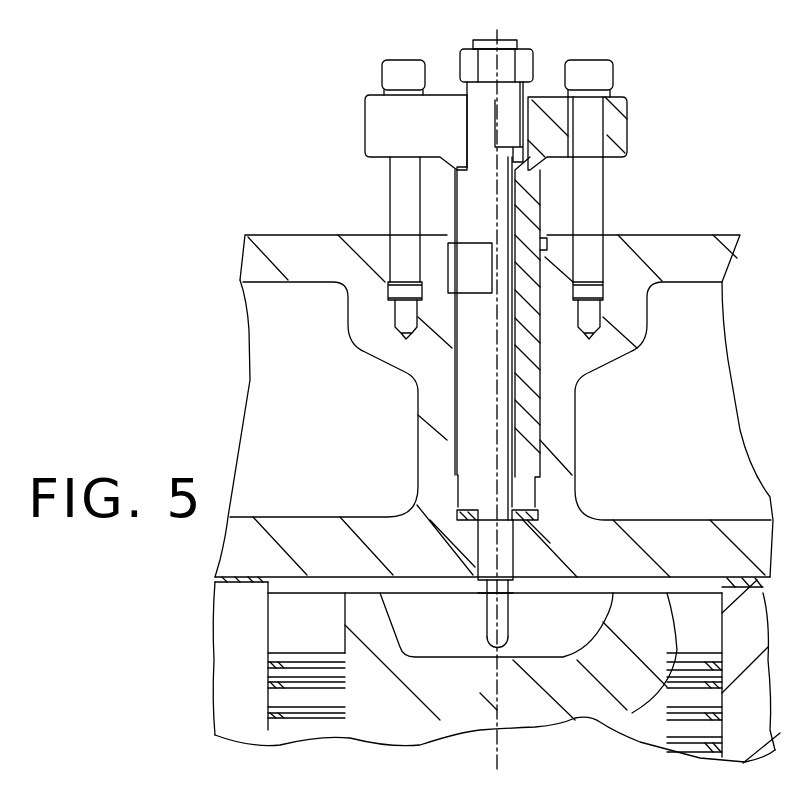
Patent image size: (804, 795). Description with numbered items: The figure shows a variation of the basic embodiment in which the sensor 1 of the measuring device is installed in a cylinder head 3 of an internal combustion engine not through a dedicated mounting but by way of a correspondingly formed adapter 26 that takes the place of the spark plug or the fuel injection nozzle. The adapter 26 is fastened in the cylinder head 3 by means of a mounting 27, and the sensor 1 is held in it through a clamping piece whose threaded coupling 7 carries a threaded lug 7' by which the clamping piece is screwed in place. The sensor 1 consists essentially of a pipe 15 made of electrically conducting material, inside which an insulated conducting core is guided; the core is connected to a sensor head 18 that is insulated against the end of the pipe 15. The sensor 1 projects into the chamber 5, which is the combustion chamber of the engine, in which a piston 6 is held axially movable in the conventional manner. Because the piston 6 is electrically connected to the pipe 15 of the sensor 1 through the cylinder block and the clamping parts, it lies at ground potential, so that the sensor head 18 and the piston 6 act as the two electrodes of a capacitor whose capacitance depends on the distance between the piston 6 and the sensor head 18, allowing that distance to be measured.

The sensor 1 is at (530, 44).
The threaded coupling 7 is at (530, 43).
The threaded lug 7' is at (486, 85).
The mounting 27 is at (563, 134).
The adapter 26 is at (560, 207).
The cylinder head 3 is at (560, 387).
The pipe 15 is at (490, 617).
The sensor head 18 is at (490, 650).
The piston 6 is at (523, 697).
The chamber 5 is at (555, 638).